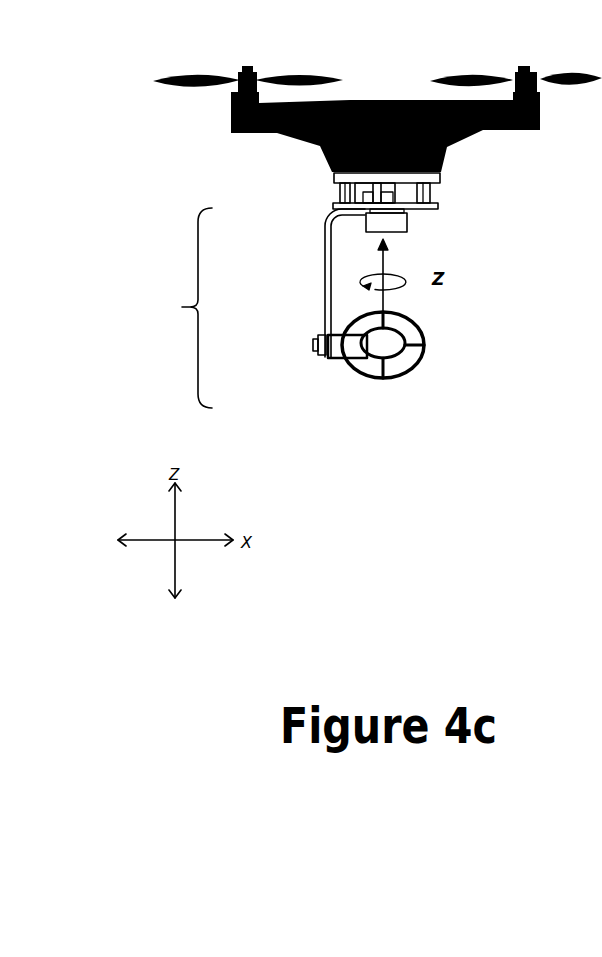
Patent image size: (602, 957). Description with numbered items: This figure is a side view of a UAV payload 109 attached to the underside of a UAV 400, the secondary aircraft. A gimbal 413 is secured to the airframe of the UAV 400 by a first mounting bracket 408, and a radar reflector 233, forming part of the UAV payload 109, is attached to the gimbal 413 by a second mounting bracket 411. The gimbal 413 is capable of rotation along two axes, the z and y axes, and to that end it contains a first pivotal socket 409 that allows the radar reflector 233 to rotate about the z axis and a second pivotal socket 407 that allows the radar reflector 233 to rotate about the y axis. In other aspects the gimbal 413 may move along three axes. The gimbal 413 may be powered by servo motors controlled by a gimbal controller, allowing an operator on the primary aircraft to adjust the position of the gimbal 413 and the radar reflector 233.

The UAV 400 is at (382, 101).
The first mounting bracket 408 is at (334, 178).
The first pivotal socket 409 is at (431, 191).
The gimbal 413 is at (316, 272).
The second pivotal socket 407 is at (315, 343).
The radar reflector 233 is at (360, 378).
The second mounting bracket 411 is at (385, 345).
The UAV payload 109 is at (176, 308).